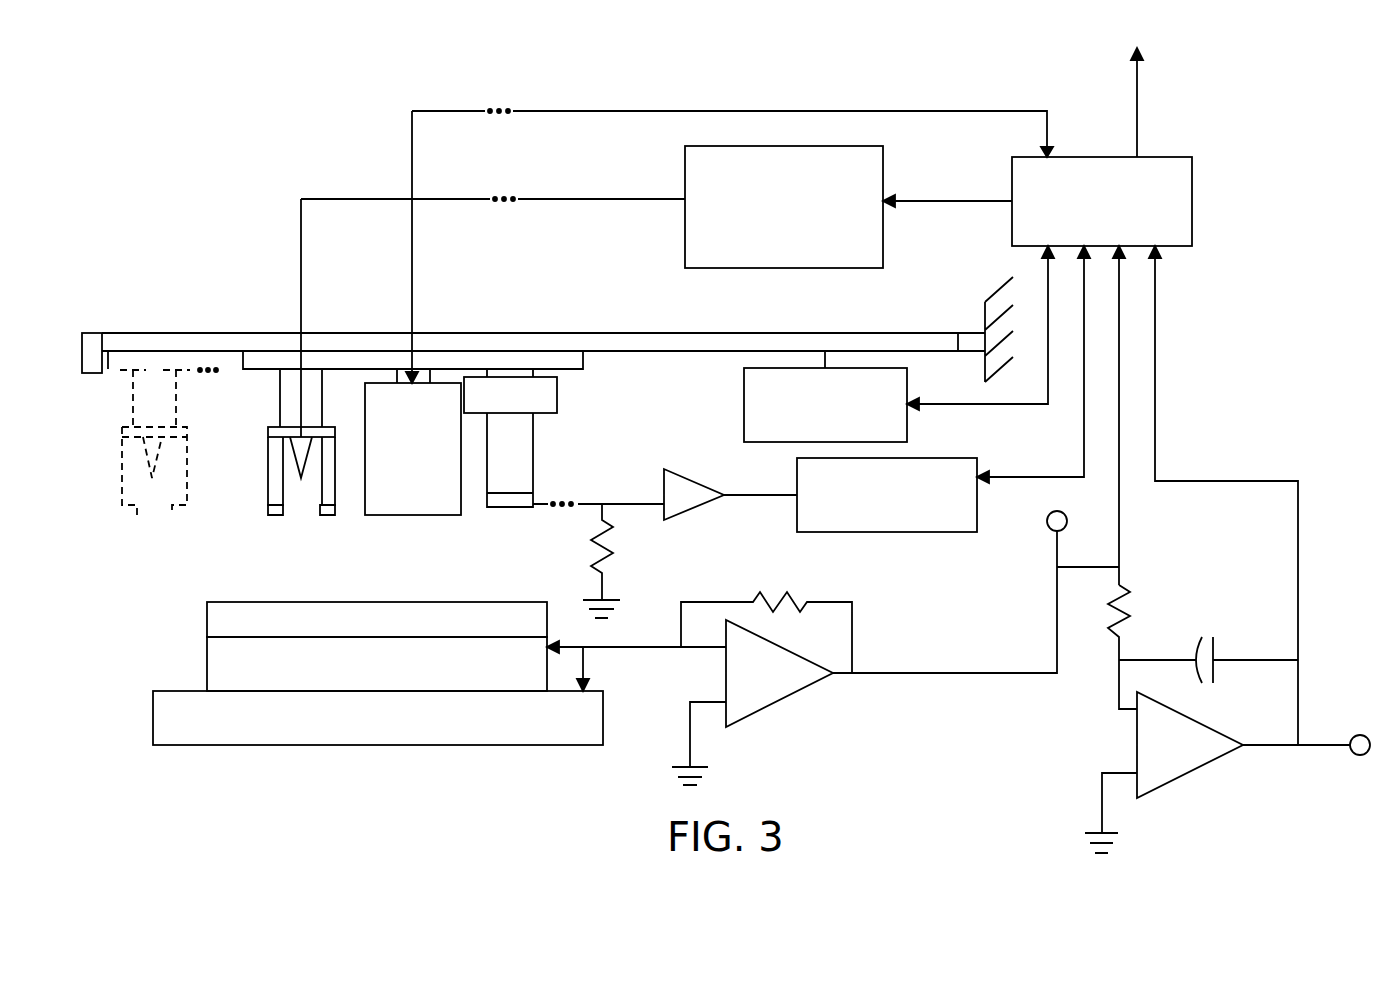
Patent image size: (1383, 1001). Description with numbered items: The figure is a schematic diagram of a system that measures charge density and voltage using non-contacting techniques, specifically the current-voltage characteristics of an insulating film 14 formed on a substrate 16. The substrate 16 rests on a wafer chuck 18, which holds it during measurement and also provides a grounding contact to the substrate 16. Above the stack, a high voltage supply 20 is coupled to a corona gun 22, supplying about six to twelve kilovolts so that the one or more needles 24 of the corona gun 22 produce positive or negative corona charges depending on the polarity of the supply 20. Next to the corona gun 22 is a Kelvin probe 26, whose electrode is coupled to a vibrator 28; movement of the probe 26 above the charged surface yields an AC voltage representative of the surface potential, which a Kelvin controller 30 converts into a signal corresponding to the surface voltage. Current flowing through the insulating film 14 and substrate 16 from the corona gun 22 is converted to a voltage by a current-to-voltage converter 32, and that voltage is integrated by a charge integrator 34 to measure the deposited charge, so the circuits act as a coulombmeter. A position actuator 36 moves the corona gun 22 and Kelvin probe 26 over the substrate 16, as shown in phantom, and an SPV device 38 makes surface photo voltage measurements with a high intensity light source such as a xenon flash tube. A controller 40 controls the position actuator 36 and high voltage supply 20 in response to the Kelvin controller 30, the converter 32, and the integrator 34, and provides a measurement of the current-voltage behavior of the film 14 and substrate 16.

The insulating film 14 is at (377, 619).
The substrate 16 is at (377, 664).
The wafer chuck 18 is at (378, 718).
The high voltage supply 20 is at (784, 207).
The corona gun 22 is at (270, 510).
The needles 24 is at (290, 465).
The Kelvin probe 26 is at (497, 508).
The vibrator 28 is at (510, 391).
The Kelvin controller 30 is at (795, 490).
The current-to-voltage converter 32 is at (775, 703).
The charge integrator 34 is at (1190, 775).
The position actuator 36 is at (744, 414).
The surface photo voltage (SPV) device 38 is at (413, 313).
The controller 40 is at (1102, 201).